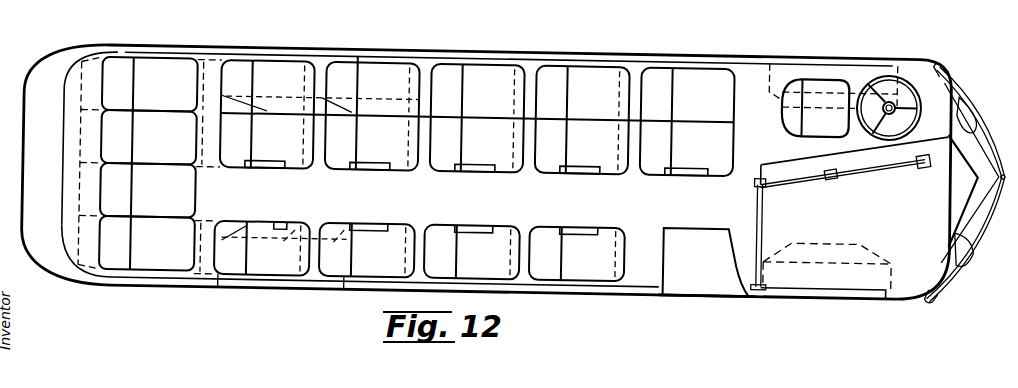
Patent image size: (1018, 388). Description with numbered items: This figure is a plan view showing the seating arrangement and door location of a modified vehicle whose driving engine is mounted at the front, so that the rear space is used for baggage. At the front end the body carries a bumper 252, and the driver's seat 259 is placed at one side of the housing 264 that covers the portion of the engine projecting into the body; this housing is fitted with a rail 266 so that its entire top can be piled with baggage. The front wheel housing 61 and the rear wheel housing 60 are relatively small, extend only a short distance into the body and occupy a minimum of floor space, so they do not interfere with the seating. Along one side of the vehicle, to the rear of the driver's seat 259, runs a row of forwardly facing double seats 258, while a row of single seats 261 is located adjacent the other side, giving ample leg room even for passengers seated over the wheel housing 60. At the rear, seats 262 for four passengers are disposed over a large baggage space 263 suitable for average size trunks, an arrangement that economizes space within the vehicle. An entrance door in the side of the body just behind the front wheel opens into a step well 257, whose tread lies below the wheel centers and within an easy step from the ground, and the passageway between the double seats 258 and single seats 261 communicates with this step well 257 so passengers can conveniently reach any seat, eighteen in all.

The baggage space 263 is at (62, 64).
The rear seats 262 is at (188, 190).
The double seats 258 is at (498, 71).
The wheel housing 60 is at (303, 217).
The single seats 261 is at (592, 245).
The step well 257 is at (684, 260).
The housing 264 is at (796, 193).
The rail 266 is at (768, 216).
The wheel housing 61 is at (901, 257).
The driver's seat 259 is at (825, 72).
The bumper 252 is at (951, 280).